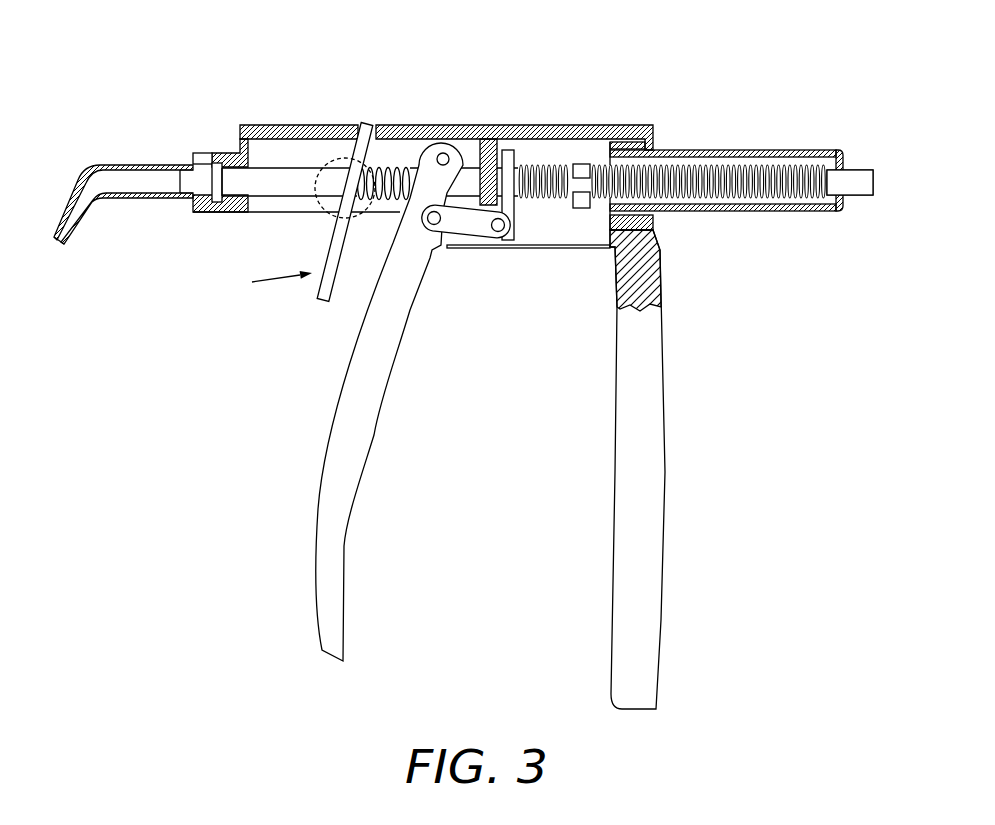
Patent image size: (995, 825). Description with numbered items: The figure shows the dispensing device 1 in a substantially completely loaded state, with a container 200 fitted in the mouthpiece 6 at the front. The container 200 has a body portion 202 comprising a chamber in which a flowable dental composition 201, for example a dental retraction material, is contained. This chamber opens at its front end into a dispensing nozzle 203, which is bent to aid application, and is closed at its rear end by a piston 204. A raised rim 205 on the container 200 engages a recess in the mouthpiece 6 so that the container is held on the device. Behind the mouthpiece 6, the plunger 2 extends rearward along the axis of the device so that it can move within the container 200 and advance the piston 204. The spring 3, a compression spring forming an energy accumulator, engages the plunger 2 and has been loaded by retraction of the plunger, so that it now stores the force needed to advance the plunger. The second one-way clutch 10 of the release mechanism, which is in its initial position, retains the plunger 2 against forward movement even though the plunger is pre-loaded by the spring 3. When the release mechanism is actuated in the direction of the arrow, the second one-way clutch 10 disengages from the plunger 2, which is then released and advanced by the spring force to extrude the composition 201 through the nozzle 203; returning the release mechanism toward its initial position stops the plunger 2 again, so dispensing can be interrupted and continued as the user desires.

The dispensing device 1 is at (582, 51).
The plunger 2 is at (293, 176).
The spring 3 is at (743, 164).
The mouthpiece 6 is at (202, 154).
The second one-way clutch 10 is at (358, 220).
The container 200 is at (109, 144).
The flowable dental composition 201 is at (113, 186).
The body portion 202 is at (174, 204).
The dispensing nozzle 203 is at (74, 220).
The piston 204 is at (199, 184).
The raised rim 205 is at (217, 162).